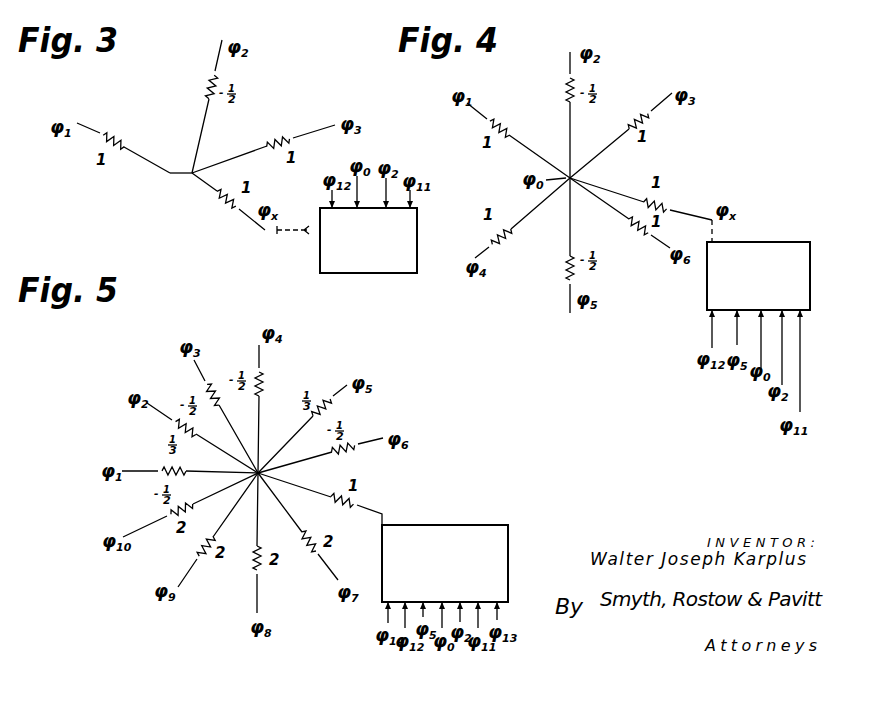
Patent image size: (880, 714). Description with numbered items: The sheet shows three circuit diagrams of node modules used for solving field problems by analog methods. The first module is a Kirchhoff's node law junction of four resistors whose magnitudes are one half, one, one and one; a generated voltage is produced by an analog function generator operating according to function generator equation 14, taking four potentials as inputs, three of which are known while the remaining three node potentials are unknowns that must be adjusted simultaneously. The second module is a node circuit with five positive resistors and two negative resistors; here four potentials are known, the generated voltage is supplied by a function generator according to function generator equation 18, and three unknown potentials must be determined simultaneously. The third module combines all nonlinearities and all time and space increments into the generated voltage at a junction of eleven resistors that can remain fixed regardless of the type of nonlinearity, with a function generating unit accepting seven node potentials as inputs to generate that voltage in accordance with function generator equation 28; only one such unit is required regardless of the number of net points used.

In FIG. 3, the function generator equation 14 is at (368, 240).
In FIG. 4, the function generator equation 18 is at (758, 276).
In FIG. 5, the function generator equation 28 is at (445, 563).